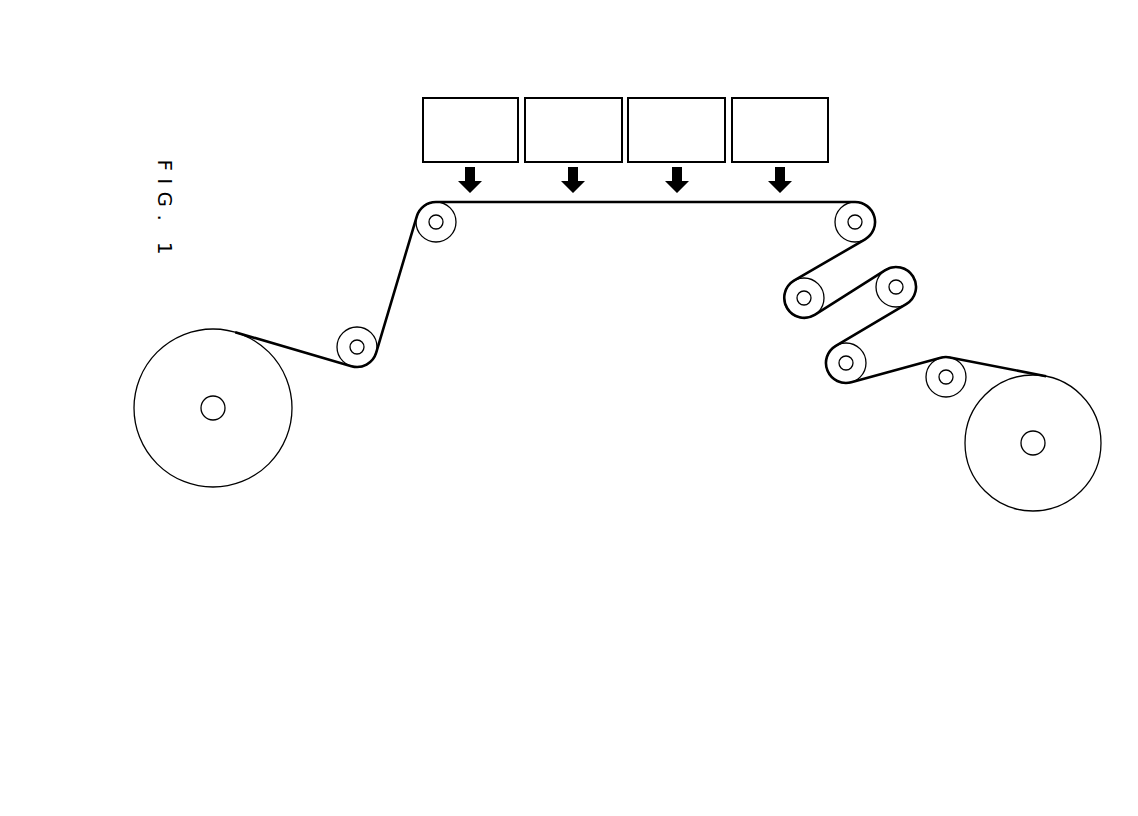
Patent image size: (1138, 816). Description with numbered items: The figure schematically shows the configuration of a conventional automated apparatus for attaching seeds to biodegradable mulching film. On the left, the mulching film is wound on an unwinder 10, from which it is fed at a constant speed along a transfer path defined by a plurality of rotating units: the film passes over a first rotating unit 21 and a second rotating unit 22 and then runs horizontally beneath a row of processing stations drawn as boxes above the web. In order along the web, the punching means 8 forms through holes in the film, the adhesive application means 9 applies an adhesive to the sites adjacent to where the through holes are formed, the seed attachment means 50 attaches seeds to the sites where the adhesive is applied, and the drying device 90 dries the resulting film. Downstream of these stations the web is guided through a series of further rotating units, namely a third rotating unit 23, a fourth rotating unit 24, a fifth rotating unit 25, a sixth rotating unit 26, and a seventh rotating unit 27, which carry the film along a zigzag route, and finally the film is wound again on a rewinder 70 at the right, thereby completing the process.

The punching means 8 is at (467, 98).
The adhesive application means 9 is at (570, 98).
The seed attachment means 50 is at (672, 98).
The drying device 90 is at (776, 98).
The unwinder 10 is at (277, 442).
The first rotating unit 21 is at (352, 332).
The second rotating unit 22 is at (449, 230).
The third rotating unit 23 is at (863, 210).
The fourth rotating unit 24 is at (790, 293).
The fifth rotating unit 25 is at (908, 278).
The sixth rotating unit 26 is at (837, 373).
The seventh rotating unit 27 is at (950, 360).
The rewinder 70 is at (977, 470).